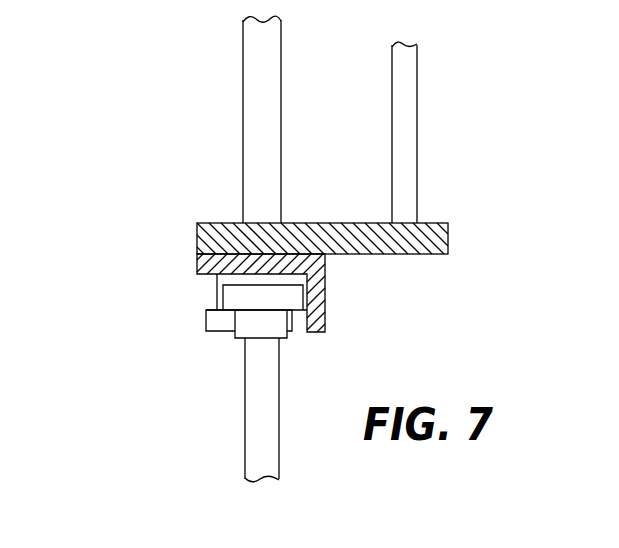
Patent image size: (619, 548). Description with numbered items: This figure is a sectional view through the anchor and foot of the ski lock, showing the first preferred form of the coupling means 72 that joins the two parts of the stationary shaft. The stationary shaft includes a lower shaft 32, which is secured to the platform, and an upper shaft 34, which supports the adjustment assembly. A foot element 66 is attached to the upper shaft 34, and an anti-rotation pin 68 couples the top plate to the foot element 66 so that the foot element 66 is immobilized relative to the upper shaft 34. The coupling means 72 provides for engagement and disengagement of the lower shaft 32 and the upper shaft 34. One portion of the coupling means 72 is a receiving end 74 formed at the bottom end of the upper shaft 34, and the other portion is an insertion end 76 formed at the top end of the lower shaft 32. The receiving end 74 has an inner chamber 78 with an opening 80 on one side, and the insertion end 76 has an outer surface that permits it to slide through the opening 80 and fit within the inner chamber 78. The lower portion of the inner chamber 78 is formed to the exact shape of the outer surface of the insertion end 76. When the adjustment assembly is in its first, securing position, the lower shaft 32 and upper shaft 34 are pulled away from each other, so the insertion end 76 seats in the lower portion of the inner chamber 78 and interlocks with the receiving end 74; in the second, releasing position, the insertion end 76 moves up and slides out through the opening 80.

The lower shaft 32 is at (245, 402).
The upper shaft 34 is at (281, 91).
The foot element 66 is at (457, 230).
The anti-rotation pin 68 is at (417, 122).
The coupling means 72 is at (170, 259).
The receiving end 74 is at (318, 290).
The insertion end 76 is at (267, 298).
The inner chamber 78 is at (220, 292).
The opening 80 is at (205, 293).